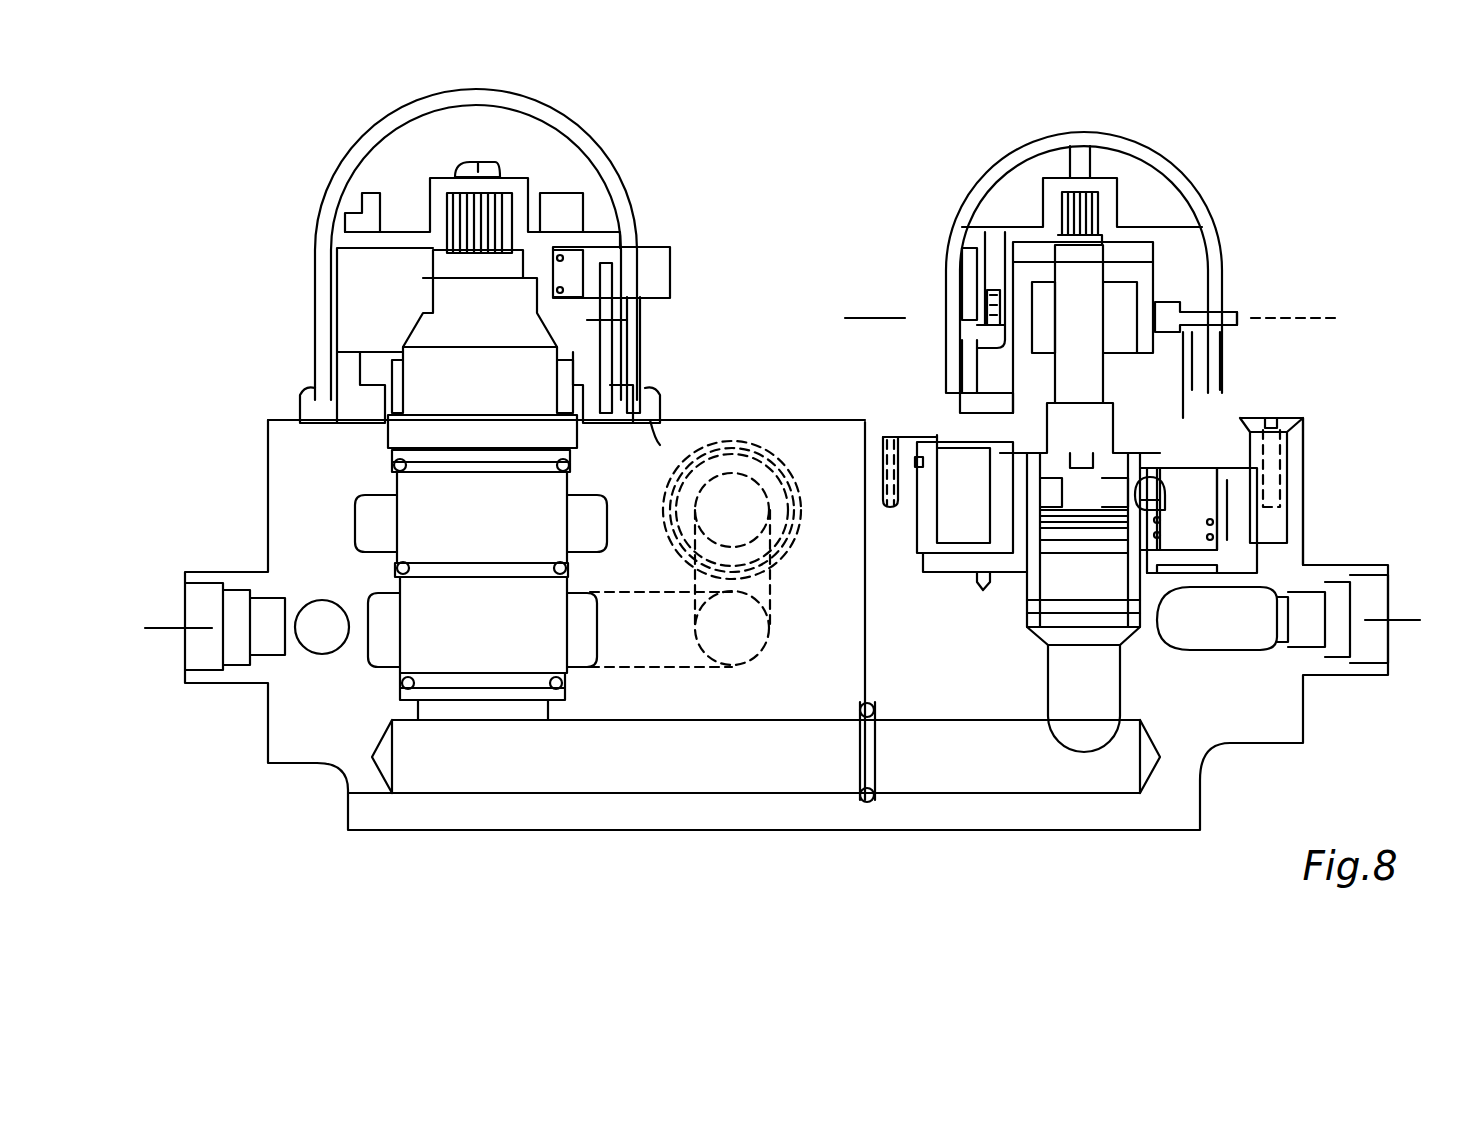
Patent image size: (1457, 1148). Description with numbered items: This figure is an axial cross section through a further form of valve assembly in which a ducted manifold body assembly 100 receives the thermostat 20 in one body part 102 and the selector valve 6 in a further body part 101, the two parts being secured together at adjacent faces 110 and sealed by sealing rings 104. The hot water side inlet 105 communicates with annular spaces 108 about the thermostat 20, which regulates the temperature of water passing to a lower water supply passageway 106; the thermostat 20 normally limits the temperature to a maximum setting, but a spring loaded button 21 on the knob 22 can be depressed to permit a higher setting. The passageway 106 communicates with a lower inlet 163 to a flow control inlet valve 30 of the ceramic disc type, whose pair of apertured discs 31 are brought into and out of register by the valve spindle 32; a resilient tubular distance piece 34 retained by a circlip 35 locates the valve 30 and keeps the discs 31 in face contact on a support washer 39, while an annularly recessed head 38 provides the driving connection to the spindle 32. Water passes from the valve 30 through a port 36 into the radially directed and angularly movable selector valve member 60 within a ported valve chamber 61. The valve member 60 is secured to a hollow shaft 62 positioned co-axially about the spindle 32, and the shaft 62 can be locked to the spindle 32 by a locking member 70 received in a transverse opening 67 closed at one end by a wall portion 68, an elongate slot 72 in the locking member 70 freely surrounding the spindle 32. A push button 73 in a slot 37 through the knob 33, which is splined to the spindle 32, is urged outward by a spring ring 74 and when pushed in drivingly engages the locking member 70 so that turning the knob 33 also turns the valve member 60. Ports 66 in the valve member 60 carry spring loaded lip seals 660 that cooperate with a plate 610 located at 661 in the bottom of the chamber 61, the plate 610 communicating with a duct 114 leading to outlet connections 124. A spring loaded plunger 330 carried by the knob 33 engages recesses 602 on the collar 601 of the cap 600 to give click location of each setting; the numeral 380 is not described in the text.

The ducted manifold body or body assembly 100 is at (768, 410).
The body part 101 is at (868, 572).
The adjacent faces 110 is at (868, 660).
The body part 102 is at (660, 440).
The outlet connections 124 is at (202, 660).
The duct 114 is at (330, 635).
The lower water supply passageway 106 is at (560, 775).
The sealing rings 104 is at (860, 795).
The knob 22 is at (585, 150).
The spring loaded button 21 is at (650, 262).
The thermostat 20 is at (432, 368).
The annular spaces 108 is at (380, 605).
The hot water side inlet 105 is at (716, 527).
The knob 33 is at (1135, 165).
The valve spindle 32 is at (1090, 367).
The locking member 70 is at (1130, 303).
The wall portion 68 is at (1012, 300).
The transverse opening 67 is at (1150, 275).
The elongate hole or slot 72 is at (1000, 275).
The spring ring 74 is at (975, 315).
The spring loaded plunger 330 is at (990, 325).
The recesses 602 is at (985, 348).
The upstanding part or collar 601 is at (988, 372).
The hollow shaft 62 is at (1022, 392).
The slot 37 is at (1205, 300).
The push button 73 is at (1240, 322).
The annularly recessed head 38 is at (1055, 460).
The flow control inlet valve 30 is at (1080, 520).
The apertured discs 31 is at (1040, 528).
The insert 380 is at (1045, 490).
The tubular distance piece 34 is at (1080, 532).
The circlip 35 is at (1135, 620).
The support washer 39 is at (1098, 555).
The lower inlet 163 is at (1100, 640).
The selector valve member 60 is at (1010, 542).
The plate 610 is at (950, 575).
The location of plate 661 is at (975, 590).
The ported valve chamber 61 is at (893, 450).
The selector valve 6 is at (1195, 470).
The ports 66 is at (1195, 515).
The port 36 is at (1165, 497).
The spring loaded lip seals 660 is at (1255, 545).
The cap 600 is at (1300, 430).